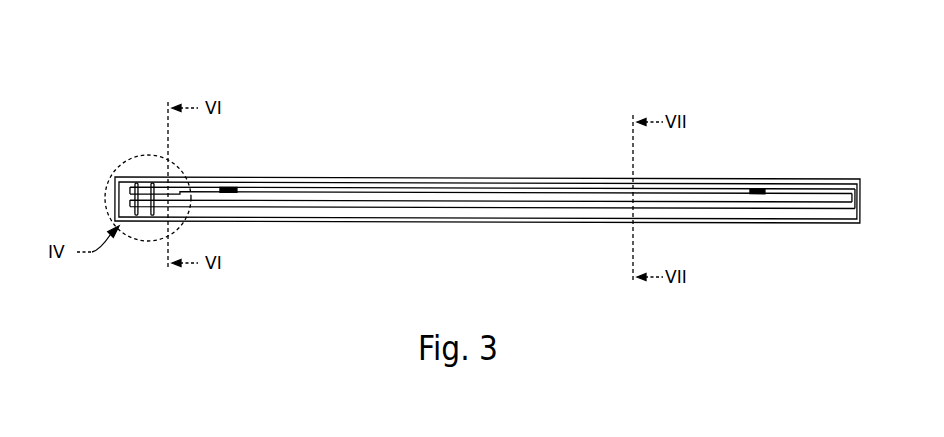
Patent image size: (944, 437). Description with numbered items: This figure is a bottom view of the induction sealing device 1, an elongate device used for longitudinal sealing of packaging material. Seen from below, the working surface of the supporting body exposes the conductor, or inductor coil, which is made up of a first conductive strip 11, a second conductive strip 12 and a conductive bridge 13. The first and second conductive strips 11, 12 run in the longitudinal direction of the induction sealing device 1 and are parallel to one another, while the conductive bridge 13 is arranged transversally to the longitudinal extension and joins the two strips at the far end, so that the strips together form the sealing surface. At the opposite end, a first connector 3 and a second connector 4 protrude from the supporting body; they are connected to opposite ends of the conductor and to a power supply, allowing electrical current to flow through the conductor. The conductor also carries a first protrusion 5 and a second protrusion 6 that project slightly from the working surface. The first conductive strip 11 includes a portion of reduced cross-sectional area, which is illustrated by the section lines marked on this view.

The induction sealing device 1 is at (468, 150).
The first connector 3 is at (137, 183).
The second connector 4 is at (152, 183).
The first protrusion 5 is at (230, 187).
The second protrusion 6 is at (757, 189).
The first conductive strip 11 is at (287, 188).
The second conductive strip 12 is at (300, 207).
The conductive bridge 13 is at (860, 196).